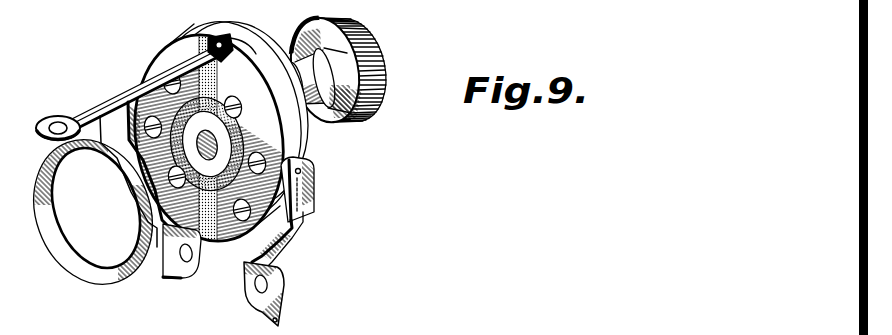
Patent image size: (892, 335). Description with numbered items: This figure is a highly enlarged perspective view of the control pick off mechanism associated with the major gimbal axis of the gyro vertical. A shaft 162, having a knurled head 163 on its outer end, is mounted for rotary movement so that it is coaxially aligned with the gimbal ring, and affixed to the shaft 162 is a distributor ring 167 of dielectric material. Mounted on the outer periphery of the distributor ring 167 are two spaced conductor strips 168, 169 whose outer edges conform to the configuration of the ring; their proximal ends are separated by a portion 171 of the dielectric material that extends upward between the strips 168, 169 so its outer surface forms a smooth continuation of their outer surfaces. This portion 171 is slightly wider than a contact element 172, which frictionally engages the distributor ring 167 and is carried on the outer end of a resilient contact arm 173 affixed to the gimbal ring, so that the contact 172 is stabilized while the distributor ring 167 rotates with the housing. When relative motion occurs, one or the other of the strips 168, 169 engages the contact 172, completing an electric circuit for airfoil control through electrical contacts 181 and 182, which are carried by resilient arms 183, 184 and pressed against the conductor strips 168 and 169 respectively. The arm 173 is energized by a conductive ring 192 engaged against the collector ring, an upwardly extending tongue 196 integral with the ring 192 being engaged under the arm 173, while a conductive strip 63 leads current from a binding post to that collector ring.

The strip 63 is at (160, 263).
The shaft 162 is at (308, 82).
The knurled head 163 is at (383, 71).
The distributor ring 167 is at (335, 185).
The conductor strip 168 is at (273, 130).
The conductor strip 169 is at (143, 69).
The portion of dielectric material 171 is at (226, 43).
The contact element 172 is at (228, 58).
The resilient contact arm 173 is at (100, 108).
The electrical contact 181 is at (300, 156).
The electrical contact 182 is at (125, 143).
The resilient arm 183 is at (284, 243).
The resilient arm 184 is at (146, 173).
The ring 192 is at (82, 262).
The tongue 196 is at (75, 119).